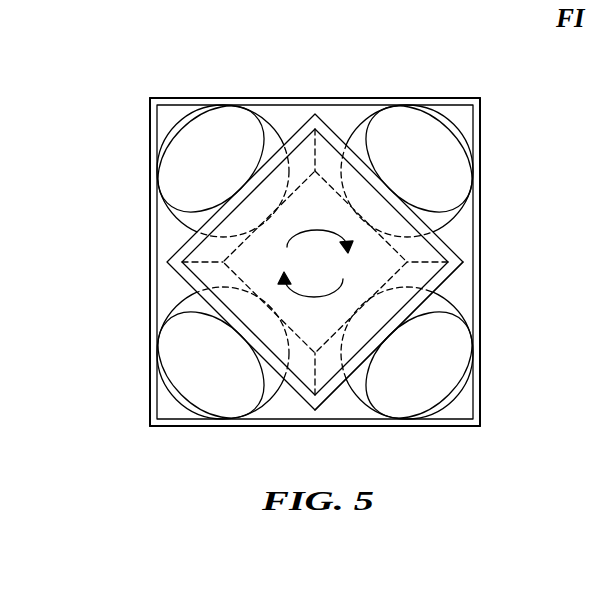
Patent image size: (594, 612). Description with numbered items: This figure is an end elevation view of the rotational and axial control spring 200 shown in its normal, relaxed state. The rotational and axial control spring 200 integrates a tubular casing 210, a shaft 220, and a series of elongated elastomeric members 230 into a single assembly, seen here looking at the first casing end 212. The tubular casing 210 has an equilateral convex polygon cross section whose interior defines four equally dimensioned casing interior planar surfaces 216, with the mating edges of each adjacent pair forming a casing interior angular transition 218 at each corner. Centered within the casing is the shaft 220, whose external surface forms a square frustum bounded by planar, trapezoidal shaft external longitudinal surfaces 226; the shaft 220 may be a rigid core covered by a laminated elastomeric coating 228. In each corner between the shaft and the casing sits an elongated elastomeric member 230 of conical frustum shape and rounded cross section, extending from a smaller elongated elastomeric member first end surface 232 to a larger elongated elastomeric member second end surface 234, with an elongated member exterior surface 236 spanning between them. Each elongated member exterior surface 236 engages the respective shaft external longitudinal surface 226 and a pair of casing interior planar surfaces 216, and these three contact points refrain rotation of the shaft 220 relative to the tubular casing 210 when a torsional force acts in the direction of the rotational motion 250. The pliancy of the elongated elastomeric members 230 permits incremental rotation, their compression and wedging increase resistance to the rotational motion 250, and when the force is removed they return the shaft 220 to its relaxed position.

The rotational and axial control spring 200 is at (140, 84).
The tubular casing 210 is at (315, 97).
The first casing end 212 is at (150, 316).
The casing interior angular transition 218 is at (162, 109).
The laminated elastomeric coating 228 is at (378, 184).
The shaft external longitudinal surface 226 is at (340, 381).
The casing interior planar surface 216 is at (202, 415).
The elongated elastomeric member first end surface 232 is at (420, 378).
The elongated elastomeric member second end surface 234 is at (458, 393).
The elongated elastomeric member 230 is at (437, 347).
The elongated member exterior surface 236 is at (425, 282).
The shaft 220 is at (365, 268).
The rotational motion 250 is at (342, 304).